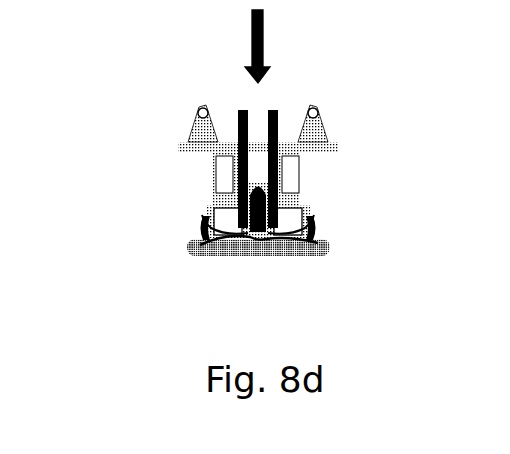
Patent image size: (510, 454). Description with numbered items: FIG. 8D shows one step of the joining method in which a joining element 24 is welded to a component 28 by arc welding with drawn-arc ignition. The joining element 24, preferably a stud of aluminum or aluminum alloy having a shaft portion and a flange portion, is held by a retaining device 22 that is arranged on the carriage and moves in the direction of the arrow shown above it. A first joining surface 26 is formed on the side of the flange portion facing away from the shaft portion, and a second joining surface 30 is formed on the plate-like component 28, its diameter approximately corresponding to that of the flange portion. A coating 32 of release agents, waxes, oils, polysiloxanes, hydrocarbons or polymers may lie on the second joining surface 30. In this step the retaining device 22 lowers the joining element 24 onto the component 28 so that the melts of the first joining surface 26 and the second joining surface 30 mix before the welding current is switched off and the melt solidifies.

The retaining device 22 is at (246, 169).
The joining element 24 is at (250, 226).
The first joining surface 26 is at (315, 233).
The component 28 is at (318, 253).
The second joining surface 30 is at (200, 243).
The coating 32 is at (323, 235).